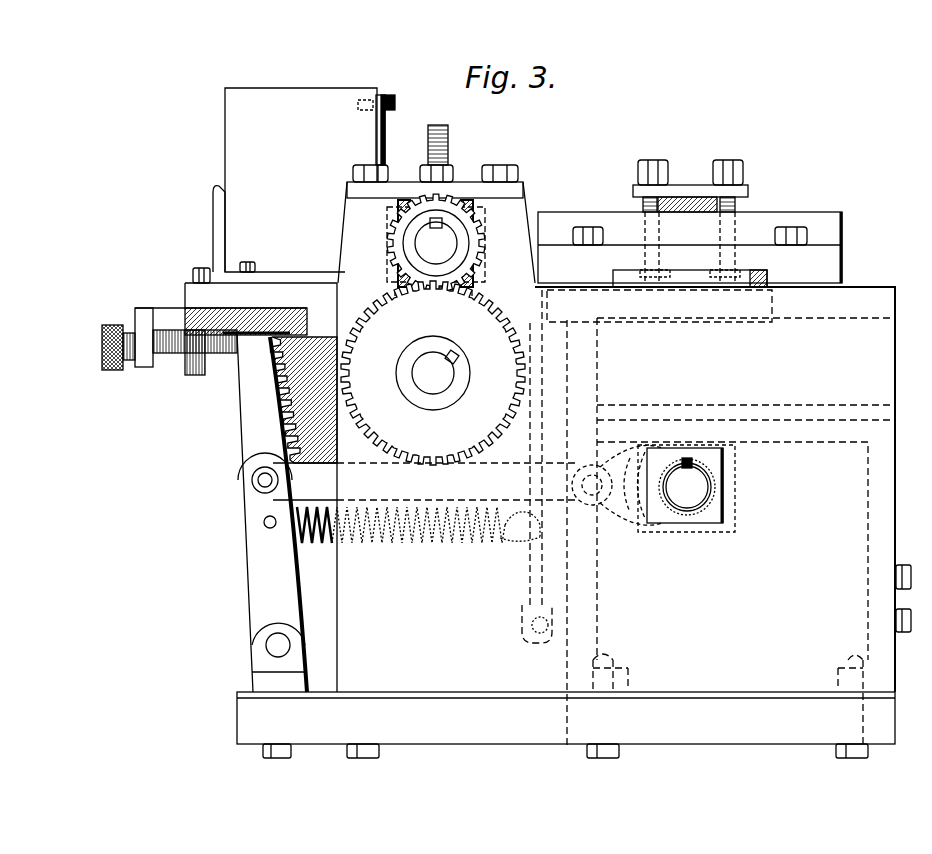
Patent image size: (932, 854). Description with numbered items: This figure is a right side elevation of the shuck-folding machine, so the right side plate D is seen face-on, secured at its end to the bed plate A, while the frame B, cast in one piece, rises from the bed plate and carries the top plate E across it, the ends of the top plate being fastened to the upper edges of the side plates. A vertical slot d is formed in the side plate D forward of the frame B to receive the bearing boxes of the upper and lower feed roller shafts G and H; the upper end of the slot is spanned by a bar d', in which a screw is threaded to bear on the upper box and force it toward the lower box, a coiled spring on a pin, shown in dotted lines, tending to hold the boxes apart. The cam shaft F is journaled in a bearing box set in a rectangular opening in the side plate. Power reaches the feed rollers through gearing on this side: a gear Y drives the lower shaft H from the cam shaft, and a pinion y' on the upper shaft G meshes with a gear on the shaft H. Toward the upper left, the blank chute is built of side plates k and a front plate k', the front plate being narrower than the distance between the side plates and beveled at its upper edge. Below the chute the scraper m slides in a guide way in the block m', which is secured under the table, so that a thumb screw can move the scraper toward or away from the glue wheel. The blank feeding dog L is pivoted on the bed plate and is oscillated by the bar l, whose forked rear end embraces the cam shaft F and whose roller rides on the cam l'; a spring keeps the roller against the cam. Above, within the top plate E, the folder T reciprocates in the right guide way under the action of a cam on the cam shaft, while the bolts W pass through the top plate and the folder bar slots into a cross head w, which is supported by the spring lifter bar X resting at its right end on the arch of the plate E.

The bed plate A is at (566, 725).
The right side plate D is at (624, 514).
The frame B is at (600, 580).
The side plate of chute k is at (301, 180).
The front plate of chute k' is at (233, 229).
The vertical slot d is at (436, 287).
The bar d' is at (456, 185).
The upper feed roller shaft G is at (448, 246).
The pinion y' is at (457, 243).
The lower feed roller shaft H is at (435, 372).
The scraper m is at (236, 314).
The block m' is at (253, 310).
The blank feeding dog L is at (243, 425).
The gear Y is at (291, 434).
The bar l is at (424, 481).
The cam l' is at (653, 491).
The cam shaft F is at (705, 498).
The top plate E is at (848, 268).
The folder T is at (679, 278).
The lifter bar X is at (750, 190).
The cross head w is at (688, 195).
The bolts W is at (725, 160).